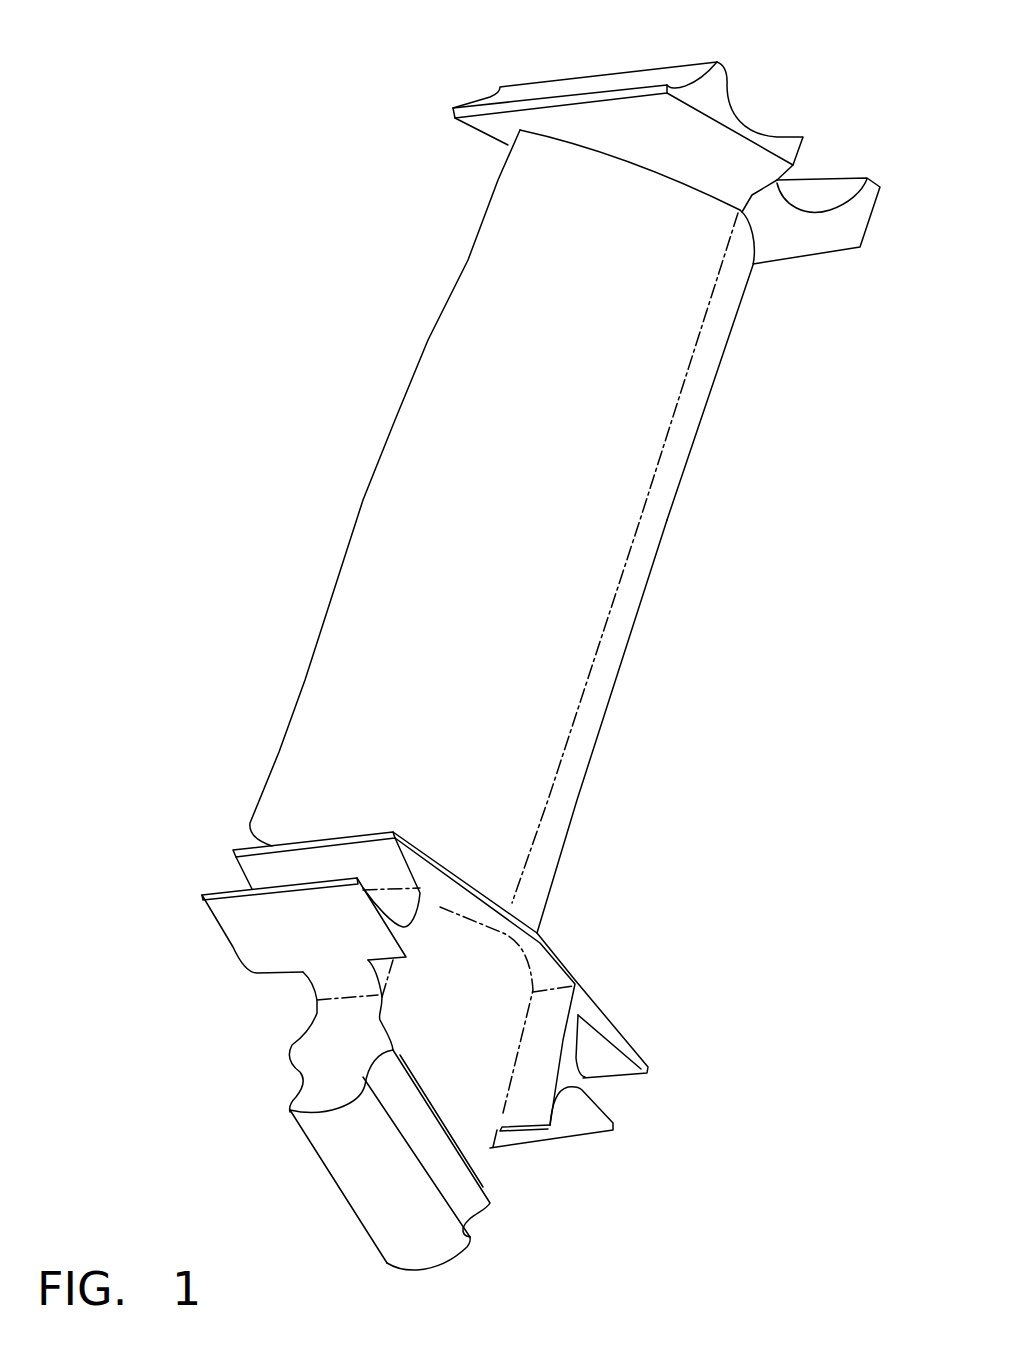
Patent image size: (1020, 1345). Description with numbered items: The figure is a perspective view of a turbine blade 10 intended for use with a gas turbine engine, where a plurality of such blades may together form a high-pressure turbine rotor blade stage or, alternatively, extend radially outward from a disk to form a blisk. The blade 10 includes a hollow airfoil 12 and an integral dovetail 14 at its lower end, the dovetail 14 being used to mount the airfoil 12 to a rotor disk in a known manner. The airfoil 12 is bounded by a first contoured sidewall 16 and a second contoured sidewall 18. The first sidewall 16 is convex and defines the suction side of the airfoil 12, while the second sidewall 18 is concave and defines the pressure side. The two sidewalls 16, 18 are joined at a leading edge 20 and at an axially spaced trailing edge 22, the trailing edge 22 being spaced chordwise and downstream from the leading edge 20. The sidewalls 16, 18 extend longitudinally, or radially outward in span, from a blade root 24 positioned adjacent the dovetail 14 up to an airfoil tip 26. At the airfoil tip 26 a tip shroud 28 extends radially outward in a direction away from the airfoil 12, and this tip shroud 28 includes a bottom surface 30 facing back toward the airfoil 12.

The turbine blade 10 is at (288, 98).
The airfoil 12 is at (598, 483).
The dovetail 14 is at (470, 1109).
The first contoured sidewall 16 is at (558, 557).
The second contoured sidewall 18 is at (615, 687).
The leading edge 20 is at (722, 421).
The trailing edge 22 is at (438, 310).
The blade root 24 is at (556, 928).
The airfoil tip 26 is at (657, 172).
The tip shroud 28 is at (713, 100).
The bottom surface 30 is at (603, 118).